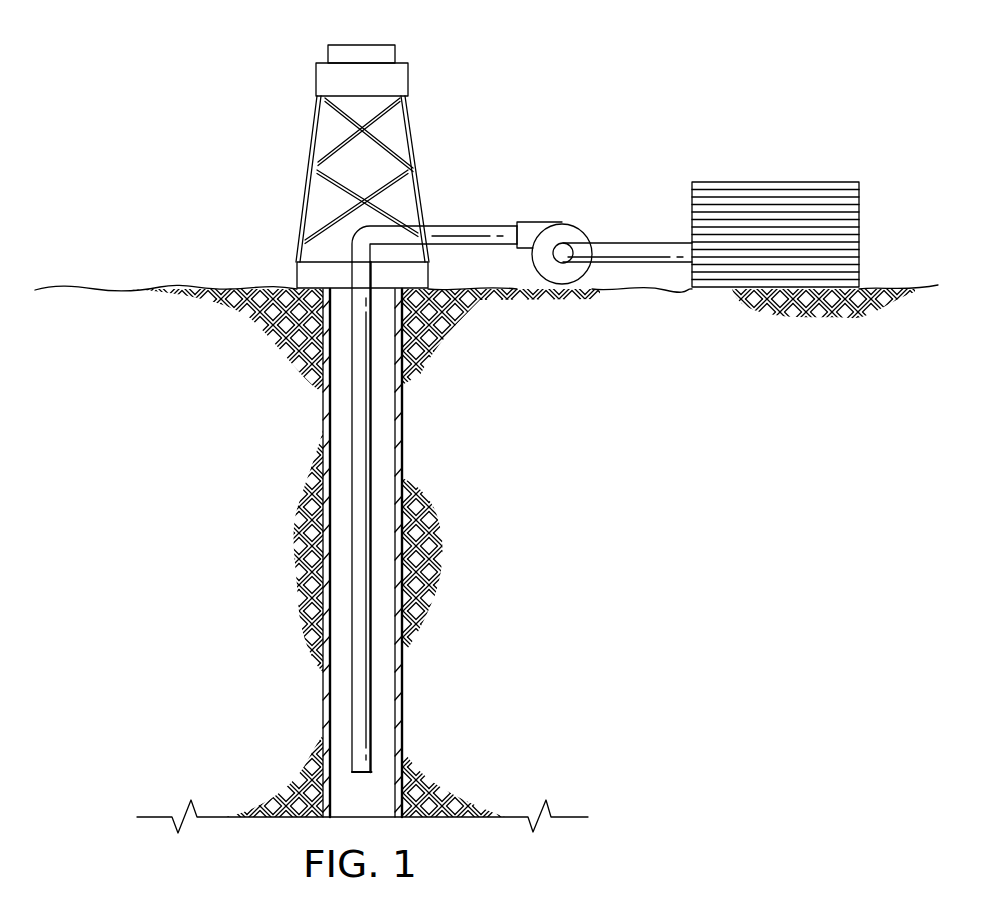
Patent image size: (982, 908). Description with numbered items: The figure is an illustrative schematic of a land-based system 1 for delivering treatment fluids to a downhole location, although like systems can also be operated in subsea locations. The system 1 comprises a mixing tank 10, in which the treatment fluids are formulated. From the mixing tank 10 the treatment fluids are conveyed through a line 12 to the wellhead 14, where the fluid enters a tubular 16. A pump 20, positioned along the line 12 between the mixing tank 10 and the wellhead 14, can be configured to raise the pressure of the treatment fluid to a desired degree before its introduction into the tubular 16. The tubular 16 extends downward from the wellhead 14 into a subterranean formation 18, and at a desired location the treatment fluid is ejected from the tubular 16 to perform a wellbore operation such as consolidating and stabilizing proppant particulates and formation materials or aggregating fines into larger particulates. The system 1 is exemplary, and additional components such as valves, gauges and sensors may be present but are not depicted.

The system 1 is at (248, 78).
The mixing tank 10 is at (776, 182).
The line 12 is at (470, 226).
The wellhead 14 is at (296, 280).
The tubular 16 is at (352, 680).
The subterranean formation 18 is at (229, 545).
The pump 20 is at (540, 222).